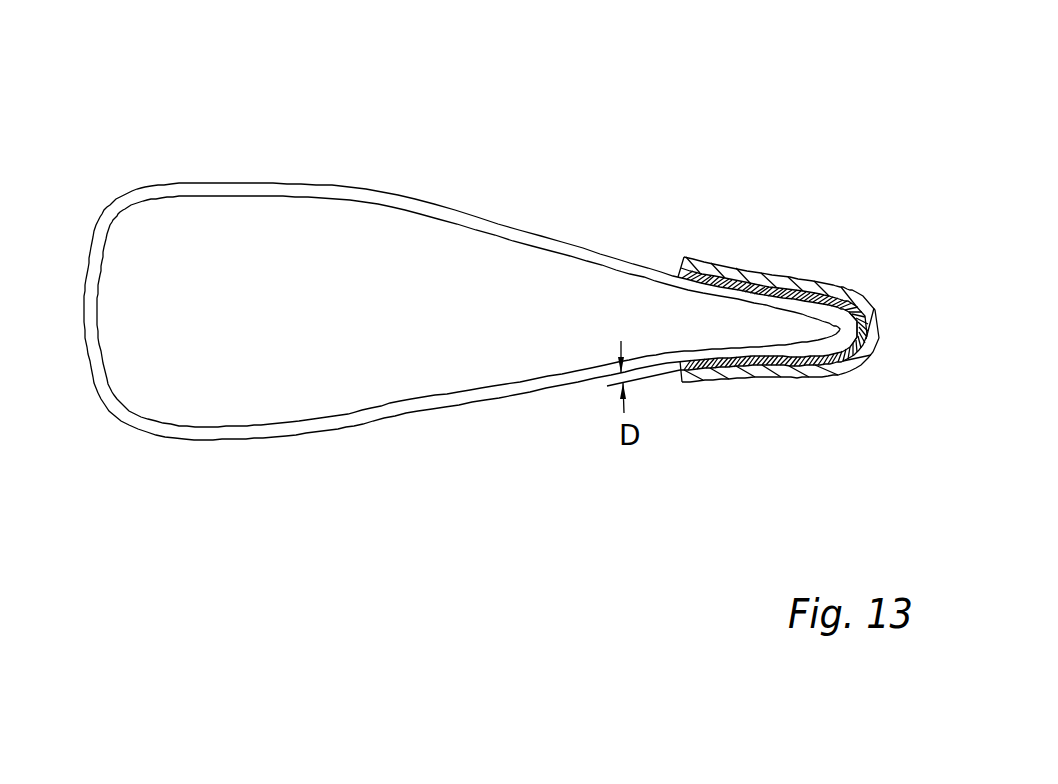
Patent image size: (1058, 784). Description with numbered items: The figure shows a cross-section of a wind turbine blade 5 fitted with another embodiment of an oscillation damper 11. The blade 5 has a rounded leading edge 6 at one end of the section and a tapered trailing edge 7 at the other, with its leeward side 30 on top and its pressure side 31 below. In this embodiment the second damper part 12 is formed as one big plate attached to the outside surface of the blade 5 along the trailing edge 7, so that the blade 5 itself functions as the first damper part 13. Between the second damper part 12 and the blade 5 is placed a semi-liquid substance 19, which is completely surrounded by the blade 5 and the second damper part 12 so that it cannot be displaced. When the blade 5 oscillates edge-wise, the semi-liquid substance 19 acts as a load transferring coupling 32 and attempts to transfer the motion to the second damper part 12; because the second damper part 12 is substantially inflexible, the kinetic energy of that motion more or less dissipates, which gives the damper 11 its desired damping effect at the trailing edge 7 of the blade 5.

The blade 5 is at (165, 135).
The leading edge 6 is at (84, 307).
The trailing edge 7 is at (866, 344).
The oscillation damper 11 is at (852, 290).
The second damper part 12 is at (765, 378).
The first damper part 13 is at (642, 267).
The semi-liquid substance 19 is at (755, 284).
The leeward side 30 is at (357, 188).
The pressure side 31 is at (380, 420).
The load transferring coupling 32 is at (826, 364).